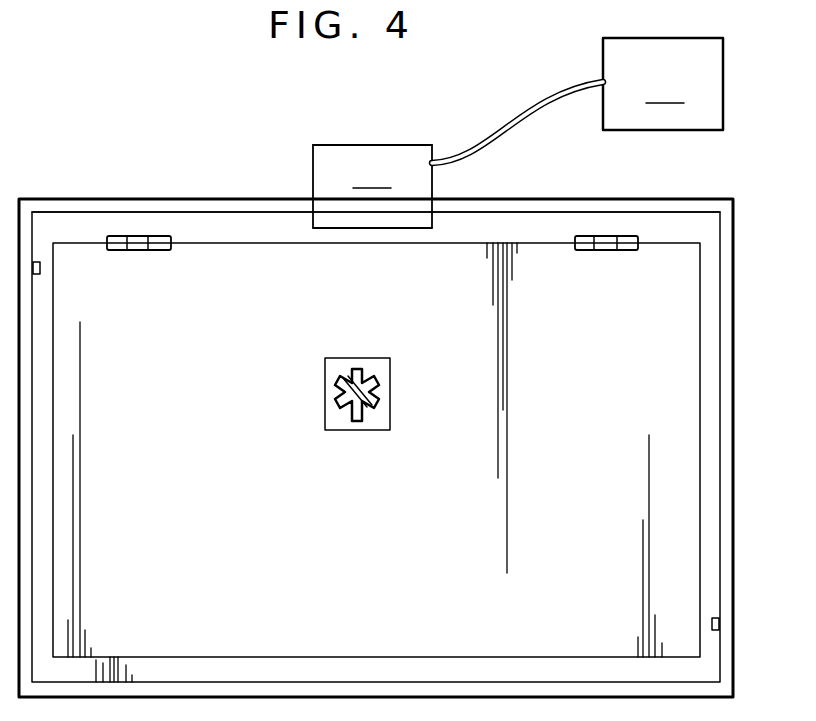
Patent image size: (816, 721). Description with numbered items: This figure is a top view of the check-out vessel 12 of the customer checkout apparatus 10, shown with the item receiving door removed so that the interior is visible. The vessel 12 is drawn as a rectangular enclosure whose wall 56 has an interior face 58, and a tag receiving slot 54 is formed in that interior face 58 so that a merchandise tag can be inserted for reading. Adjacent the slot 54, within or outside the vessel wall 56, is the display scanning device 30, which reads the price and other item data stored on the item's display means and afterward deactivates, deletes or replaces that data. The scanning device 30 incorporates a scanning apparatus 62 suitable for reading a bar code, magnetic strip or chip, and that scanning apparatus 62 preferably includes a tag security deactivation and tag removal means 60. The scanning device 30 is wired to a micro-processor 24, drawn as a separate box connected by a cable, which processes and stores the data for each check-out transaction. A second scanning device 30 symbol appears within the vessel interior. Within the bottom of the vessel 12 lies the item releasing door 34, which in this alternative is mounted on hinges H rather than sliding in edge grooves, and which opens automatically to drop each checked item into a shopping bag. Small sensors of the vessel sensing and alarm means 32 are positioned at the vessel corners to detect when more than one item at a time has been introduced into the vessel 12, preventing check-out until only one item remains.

The customer checkout apparatus 10 is at (138, 88).
The item check-out vessel 12 is at (735, 355).
The micro-processor 24 is at (577, 100).
The display scanning device 30 is at (340, 382).
The vessel sensing and alarm means 32 is at (40, 268).
The item releasing door 34 is at (426, 541).
The tag receiving slot 54 is at (375, 229).
The vessel wall 56 is at (128, 199).
The interior face 58 is at (233, 214).
The tag security deactivation and tag removal means 60 is at (340, 145).
The scanning apparatus 62 is at (398, 145).
The hinges H is at (135, 250).